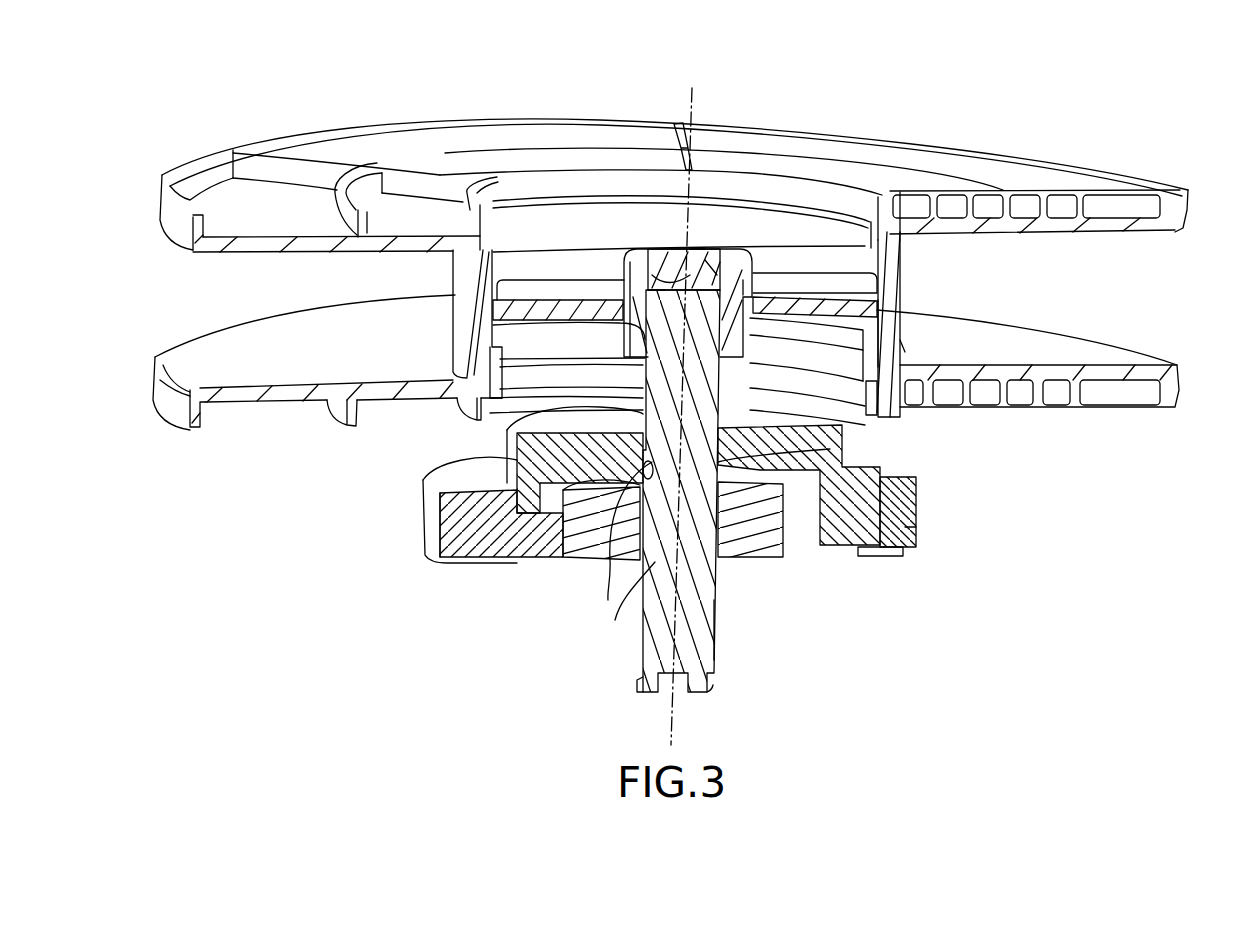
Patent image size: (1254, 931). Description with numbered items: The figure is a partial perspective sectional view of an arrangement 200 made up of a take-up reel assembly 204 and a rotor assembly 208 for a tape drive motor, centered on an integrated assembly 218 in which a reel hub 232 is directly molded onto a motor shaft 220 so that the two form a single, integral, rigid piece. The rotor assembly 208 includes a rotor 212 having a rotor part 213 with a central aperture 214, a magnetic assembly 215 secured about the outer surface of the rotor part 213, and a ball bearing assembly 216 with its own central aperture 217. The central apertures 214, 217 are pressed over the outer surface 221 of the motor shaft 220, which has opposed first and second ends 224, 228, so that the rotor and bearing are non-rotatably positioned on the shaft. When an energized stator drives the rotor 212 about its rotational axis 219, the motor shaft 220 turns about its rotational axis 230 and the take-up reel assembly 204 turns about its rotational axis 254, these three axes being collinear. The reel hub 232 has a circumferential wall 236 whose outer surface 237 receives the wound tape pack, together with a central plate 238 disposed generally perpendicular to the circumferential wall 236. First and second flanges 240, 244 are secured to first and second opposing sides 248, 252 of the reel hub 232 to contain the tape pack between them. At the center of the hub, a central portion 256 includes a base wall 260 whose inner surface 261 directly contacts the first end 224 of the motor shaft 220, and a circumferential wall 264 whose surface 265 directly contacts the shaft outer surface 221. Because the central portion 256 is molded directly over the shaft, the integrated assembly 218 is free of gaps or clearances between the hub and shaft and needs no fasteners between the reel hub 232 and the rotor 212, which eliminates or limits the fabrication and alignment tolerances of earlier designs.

The arrangement 200 is at (240, 80).
The take-up reel assembly 204 is at (142, 146).
The rotor assembly 208 is at (403, 433).
The rotor 212 is at (918, 513).
The rotor part 213 is at (862, 543).
The central aperture 214 is at (640, 532).
The magnetic assembly 215 is at (920, 535).
The ball bearing assembly 216 is at (745, 537).
The central aperture 217 is at (625, 604).
The integrated assembly 218 is at (878, 632).
The rotational axis 219 is at (695, 100).
The motor shaft 220 is at (720, 655).
The outer surface 221 is at (820, 460).
The first end 224 is at (713, 270).
The second end 228 is at (652, 690).
The rotational axis 230 is at (751, 297).
The reel hub 232 is at (903, 333).
The circumferential wall 236 is at (900, 262).
The outer surface 237 is at (920, 290).
The central plate 238 is at (528, 314).
The first flange 240 is at (1188, 206).
The second flange 244 is at (1178, 385).
The first side 248 is at (883, 237).
The second side 252 is at (883, 365).
The rotational axis 254 is at (767, 407).
The central portion 256 is at (660, 247).
The base wall 260 is at (697, 258).
The inner surface 261 is at (660, 287).
The circumferential wall 264 is at (743, 287).
The surface 265 is at (768, 338).